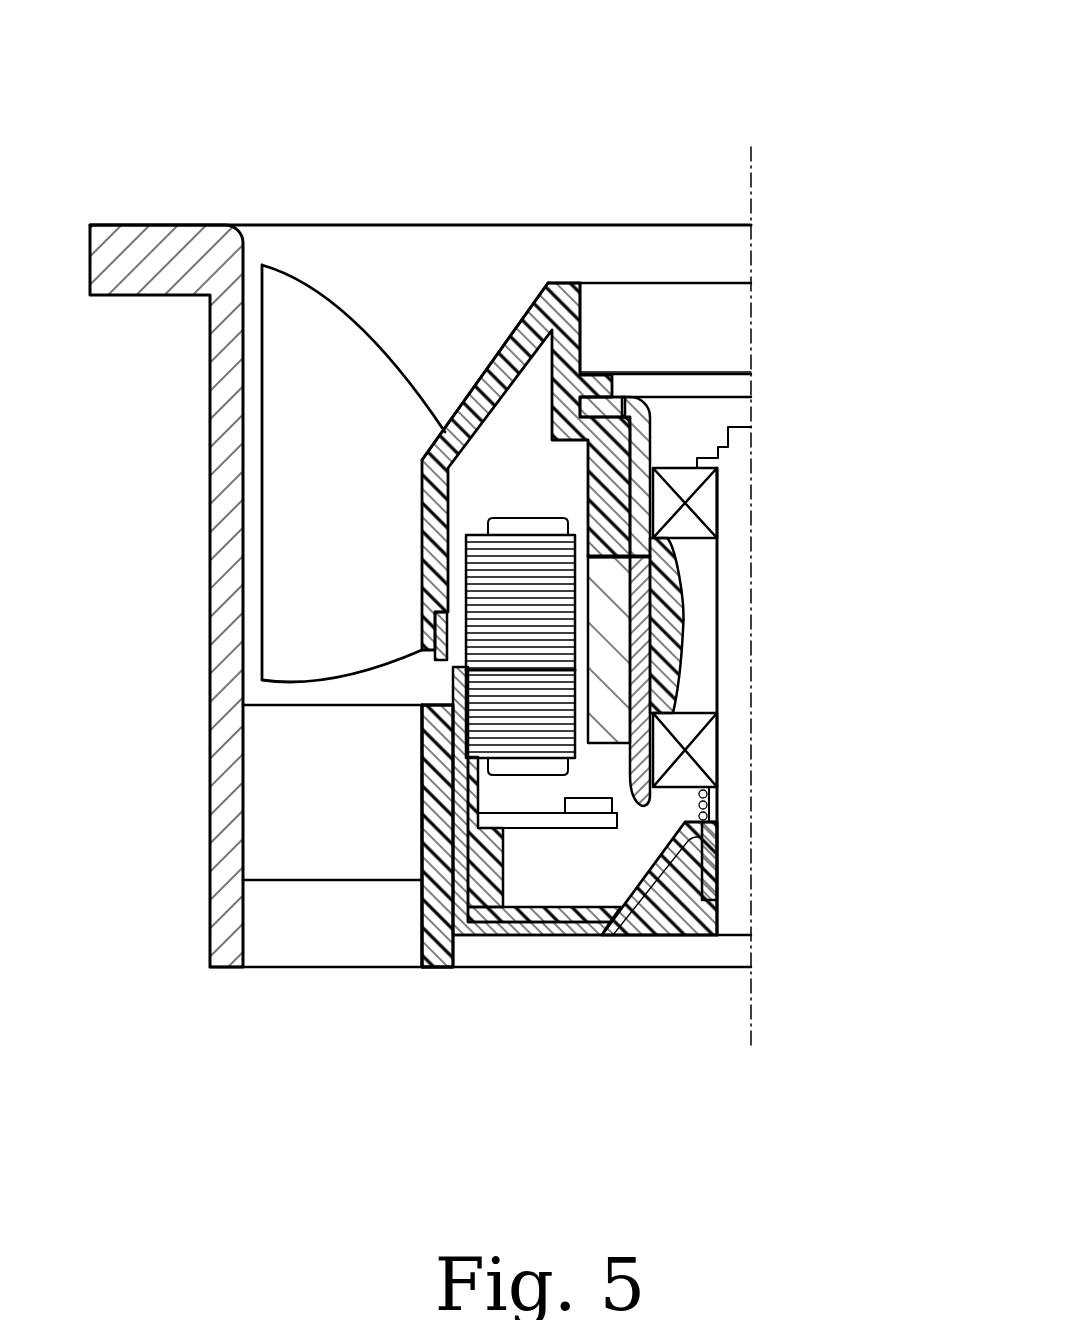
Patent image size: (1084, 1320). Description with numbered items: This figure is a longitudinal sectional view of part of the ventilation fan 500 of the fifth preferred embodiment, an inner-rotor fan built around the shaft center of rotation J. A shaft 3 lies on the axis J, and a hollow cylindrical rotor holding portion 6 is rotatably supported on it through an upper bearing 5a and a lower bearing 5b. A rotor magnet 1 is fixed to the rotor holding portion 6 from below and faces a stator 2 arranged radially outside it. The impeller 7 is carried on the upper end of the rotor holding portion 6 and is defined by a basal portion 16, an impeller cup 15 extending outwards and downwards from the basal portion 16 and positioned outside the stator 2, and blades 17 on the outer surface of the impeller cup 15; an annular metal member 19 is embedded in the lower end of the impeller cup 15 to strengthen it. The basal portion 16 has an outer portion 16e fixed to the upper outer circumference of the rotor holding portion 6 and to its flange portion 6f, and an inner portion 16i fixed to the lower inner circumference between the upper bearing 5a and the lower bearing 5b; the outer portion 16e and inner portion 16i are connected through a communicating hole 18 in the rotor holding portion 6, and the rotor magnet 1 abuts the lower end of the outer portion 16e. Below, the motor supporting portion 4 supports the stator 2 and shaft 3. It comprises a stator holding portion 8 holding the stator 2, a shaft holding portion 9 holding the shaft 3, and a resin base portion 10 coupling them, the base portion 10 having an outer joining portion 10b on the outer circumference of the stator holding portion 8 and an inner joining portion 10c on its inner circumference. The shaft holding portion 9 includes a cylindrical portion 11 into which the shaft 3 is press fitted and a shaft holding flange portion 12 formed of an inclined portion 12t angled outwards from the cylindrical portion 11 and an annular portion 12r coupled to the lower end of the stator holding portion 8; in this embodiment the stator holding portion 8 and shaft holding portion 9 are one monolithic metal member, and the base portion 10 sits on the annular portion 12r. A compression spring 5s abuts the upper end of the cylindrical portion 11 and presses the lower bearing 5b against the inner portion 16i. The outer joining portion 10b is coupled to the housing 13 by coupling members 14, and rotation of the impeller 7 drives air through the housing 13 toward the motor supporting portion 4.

The ventilation fan 500 is at (691, 106).
The shaft center of rotation J is at (756, 157).
The rotor magnet 1 is at (600, 575).
The stator 2 is at (488, 607).
The shaft 3 is at (740, 432).
The motor supporting portion 4 is at (693, 1143).
The upper bearing 5a is at (703, 497).
The lower bearing 5b is at (705, 748).
The compression spring 5s is at (707, 808).
The rotor holding portion 6 is at (643, 662).
The flange portion 6f is at (592, 405).
The impeller 7 is at (622, 130).
The stator holding portion 8 is at (435, 897).
The shaft holding portion 9 is at (745, 1096).
The base portion 10 is at (522, 915).
The outer joining portion 10b is at (428, 770).
The inner joining portion 10c is at (477, 778).
The cylindrical portion 11 is at (710, 873).
The shaft holding flange portion 12 is at (705, 1046).
The annular portion 12r is at (552, 930).
The inclined portion 12t is at (663, 880).
The housing 13 is at (213, 793).
The coupling members 14 is at (270, 850).
The impeller cup 15 is at (480, 385).
The basal portion 16 is at (672, 182).
The outer portion 16e is at (525, 340).
The inner portion 16i is at (662, 563).
The blades 17 is at (335, 343).
The communicating hole 18 is at (630, 552).
The annular metal member 19 is at (442, 650).